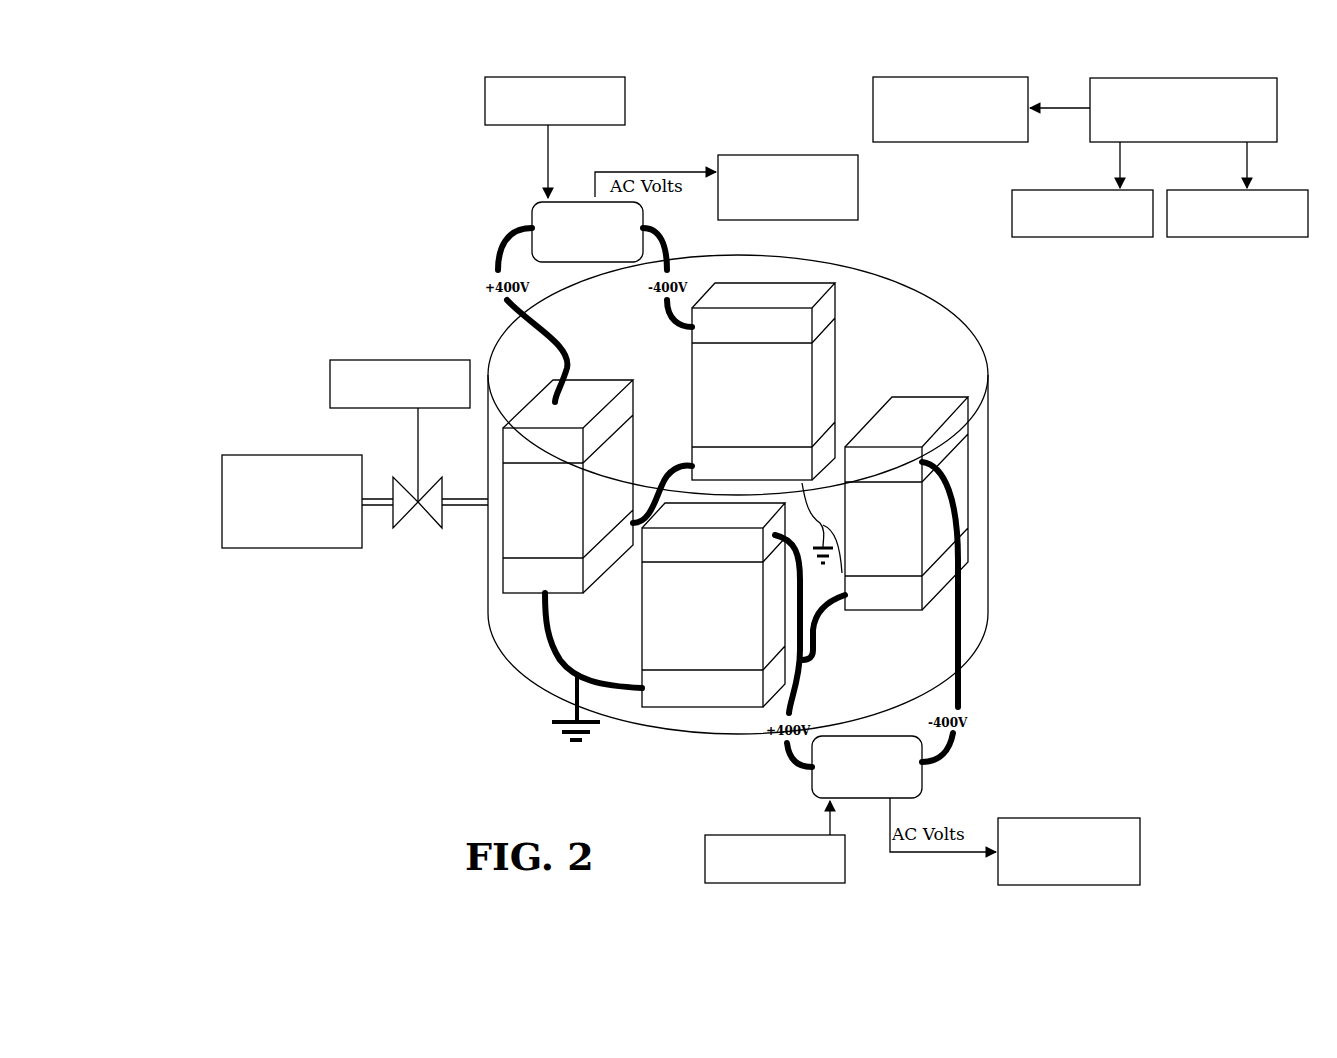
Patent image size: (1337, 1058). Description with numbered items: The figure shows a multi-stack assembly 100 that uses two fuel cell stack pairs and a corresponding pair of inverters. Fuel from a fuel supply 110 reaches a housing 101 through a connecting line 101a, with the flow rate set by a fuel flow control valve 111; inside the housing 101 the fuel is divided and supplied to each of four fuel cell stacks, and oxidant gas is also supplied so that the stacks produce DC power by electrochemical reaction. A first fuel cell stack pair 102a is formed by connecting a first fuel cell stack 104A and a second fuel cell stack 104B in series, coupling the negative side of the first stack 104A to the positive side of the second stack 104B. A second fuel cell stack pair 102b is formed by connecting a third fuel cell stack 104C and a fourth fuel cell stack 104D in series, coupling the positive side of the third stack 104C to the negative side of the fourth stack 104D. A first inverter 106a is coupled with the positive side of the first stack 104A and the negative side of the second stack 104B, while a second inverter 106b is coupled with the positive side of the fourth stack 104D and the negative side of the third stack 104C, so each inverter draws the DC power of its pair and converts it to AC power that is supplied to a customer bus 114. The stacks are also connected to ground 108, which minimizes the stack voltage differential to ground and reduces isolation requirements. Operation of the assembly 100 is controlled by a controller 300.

The multi-stack assembly 100 is at (831, 494).
The housing 101 is at (488, 636).
The connecting line 101a is at (378, 505).
The first fuel cell stack pair 102a is at (636, 350).
The second fuel cell stack pair 102b is at (842, 625).
The first fuel cell stack 104A is at (623, 468).
The second fuel cell stack 104B is at (828, 372).
The third fuel cell stack 104C is at (960, 497).
The fourth fuel cell stack 104D is at (667, 693).
The first inverter 106a is at (530, 218).
The second inverter 106b is at (922, 780).
The ground 108 is at (555, 727).
The fuel supply 110 is at (265, 458).
The fuel flow control valve 111 is at (425, 522).
The customer bus 114 is at (830, 220).
The controller 300 is at (625, 100).